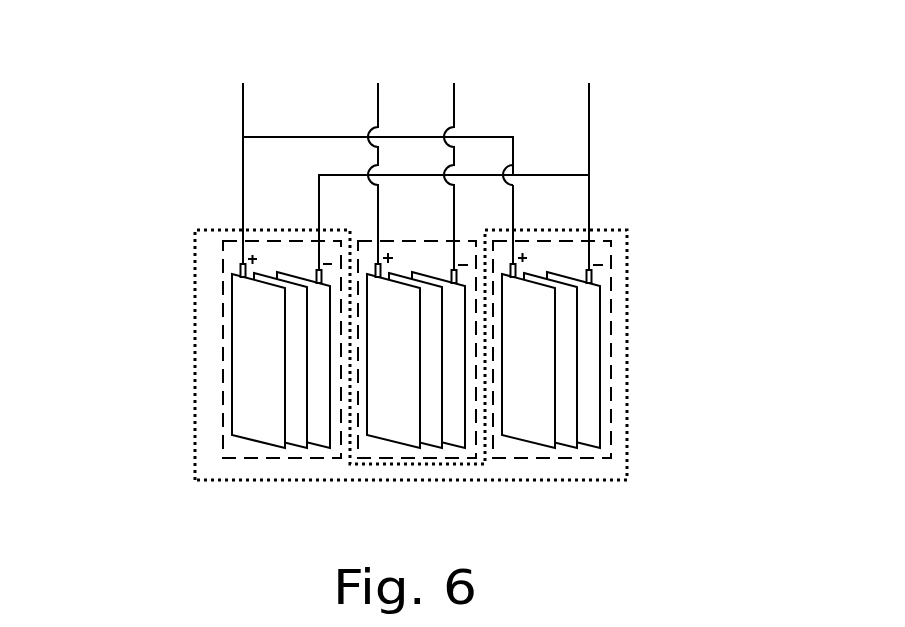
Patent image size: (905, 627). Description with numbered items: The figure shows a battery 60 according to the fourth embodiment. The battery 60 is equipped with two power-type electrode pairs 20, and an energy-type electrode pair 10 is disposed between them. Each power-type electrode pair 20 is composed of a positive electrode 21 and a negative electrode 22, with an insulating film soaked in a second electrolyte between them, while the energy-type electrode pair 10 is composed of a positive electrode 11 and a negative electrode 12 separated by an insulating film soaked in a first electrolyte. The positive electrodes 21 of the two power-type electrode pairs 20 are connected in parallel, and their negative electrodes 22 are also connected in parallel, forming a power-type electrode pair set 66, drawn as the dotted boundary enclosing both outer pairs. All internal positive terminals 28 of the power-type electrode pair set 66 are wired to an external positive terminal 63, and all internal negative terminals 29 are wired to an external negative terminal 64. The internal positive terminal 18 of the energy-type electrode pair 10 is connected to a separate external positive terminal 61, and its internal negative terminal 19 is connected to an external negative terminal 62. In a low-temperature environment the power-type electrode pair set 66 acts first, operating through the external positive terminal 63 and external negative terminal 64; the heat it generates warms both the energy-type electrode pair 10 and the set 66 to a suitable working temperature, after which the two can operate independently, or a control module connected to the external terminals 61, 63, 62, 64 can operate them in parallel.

The battery 60 is at (121, 52).
The power-type electrode pair set 66 is at (627, 412).
The power-type electrode pair 20 is at (222, 320).
The energy-type electrode pair 10 is at (398, 241).
The positive electrode 21 is at (250, 440).
The negative electrode 22 is at (318, 445).
The positive electrode 11 is at (385, 440).
The negative electrode 12 is at (453, 445).
The internal positive terminal 28 is at (240, 268).
The internal negative terminal 29 is at (317, 276).
The internal positive terminal 18 is at (378, 265).
The internal negative terminal 19 is at (468, 268).
The external positive terminal 61 is at (379, 157).
The external negative terminal 62 is at (454, 160).
The external positive terminal 63 is at (372, 157).
The external negative terminal 64 is at (460, 160).